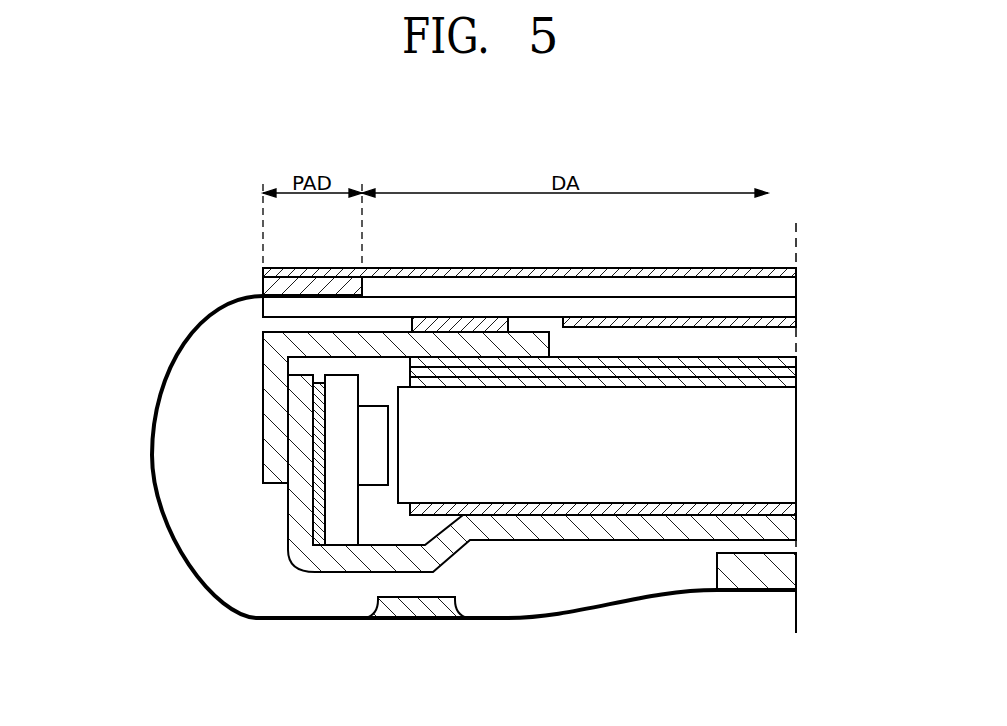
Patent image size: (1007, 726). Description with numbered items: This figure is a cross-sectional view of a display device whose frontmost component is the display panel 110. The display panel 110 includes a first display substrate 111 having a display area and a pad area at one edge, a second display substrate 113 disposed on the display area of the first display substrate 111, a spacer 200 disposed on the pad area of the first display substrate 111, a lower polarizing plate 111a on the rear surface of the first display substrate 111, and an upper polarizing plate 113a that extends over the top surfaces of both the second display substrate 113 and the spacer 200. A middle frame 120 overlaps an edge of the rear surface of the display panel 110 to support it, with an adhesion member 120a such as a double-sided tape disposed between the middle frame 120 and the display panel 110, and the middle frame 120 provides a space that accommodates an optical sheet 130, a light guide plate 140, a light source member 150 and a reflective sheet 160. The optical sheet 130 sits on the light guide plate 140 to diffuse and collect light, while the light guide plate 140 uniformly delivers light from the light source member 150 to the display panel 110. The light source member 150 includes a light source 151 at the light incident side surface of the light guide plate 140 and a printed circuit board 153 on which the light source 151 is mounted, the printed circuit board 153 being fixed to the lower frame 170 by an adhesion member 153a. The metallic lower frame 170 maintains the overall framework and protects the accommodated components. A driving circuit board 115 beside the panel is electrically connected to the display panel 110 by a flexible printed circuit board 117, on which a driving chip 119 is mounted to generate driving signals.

The display panel 110 is at (606, 301).
The first display substrate 111 is at (785, 308).
The lower polarizing plate 111a is at (785, 322).
The second display substrate 113 is at (785, 287).
The upper polarizing plate 113a is at (785, 272).
The driving circuit board 115 is at (787, 570).
The flexible printed circuit board 117 is at (310, 622).
The driving chip 119 is at (415, 612).
The middle frame 120 is at (283, 372).
The adhesion member 120a is at (460, 316).
The optical sheet 130 is at (803, 355).
The light guide plate 140 is at (788, 450).
The light source member 150 is at (209, 461).
The light source 151 is at (373, 435).
The printed circuit board 153 is at (340, 467).
The adhesion member 153a is at (318, 513).
The reflective sheet 160 is at (777, 509).
The lower frame 170 is at (785, 525).
The spacer 200 is at (268, 283).